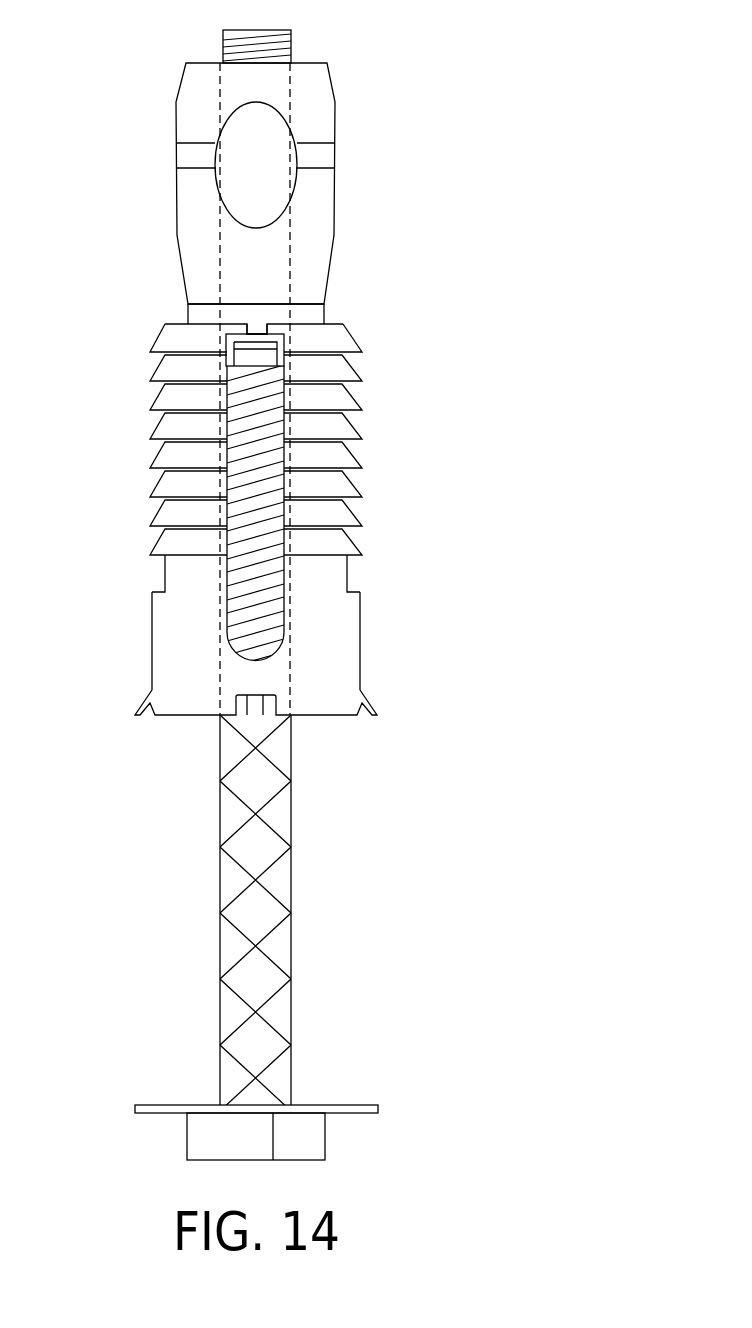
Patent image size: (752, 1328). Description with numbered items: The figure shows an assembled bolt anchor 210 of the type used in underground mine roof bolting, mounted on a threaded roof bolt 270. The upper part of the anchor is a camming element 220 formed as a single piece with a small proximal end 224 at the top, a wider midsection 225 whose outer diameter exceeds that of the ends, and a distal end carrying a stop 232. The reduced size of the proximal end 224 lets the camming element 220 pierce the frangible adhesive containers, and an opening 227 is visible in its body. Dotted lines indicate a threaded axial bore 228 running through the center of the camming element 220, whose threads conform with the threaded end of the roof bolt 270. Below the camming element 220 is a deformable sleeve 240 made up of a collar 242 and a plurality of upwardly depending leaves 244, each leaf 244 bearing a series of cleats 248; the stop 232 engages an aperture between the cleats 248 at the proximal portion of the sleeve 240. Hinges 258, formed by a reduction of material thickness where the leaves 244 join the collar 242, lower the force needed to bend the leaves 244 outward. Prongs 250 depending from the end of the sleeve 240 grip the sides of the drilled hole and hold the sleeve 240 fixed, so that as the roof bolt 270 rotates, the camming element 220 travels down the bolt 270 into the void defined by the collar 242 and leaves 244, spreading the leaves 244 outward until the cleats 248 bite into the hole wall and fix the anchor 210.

The bolt anchor 210 is at (467, 257).
The camming element 220 is at (372, 256).
The proximal end 224 is at (330, 82).
The midsection region 225 is at (327, 158).
The opening 227 is at (237, 135).
The axial bore 228 is at (216, 207).
The sleeve 240 is at (386, 407).
The leaf 244 is at (223, 345).
The stop 232 is at (221, 343).
The cleats 248 is at (157, 403).
The hinges 258 is at (165, 574).
The collar 242 is at (151, 640).
The prongs 250 is at (133, 715).
The roof bolt 270 is at (220, 895).